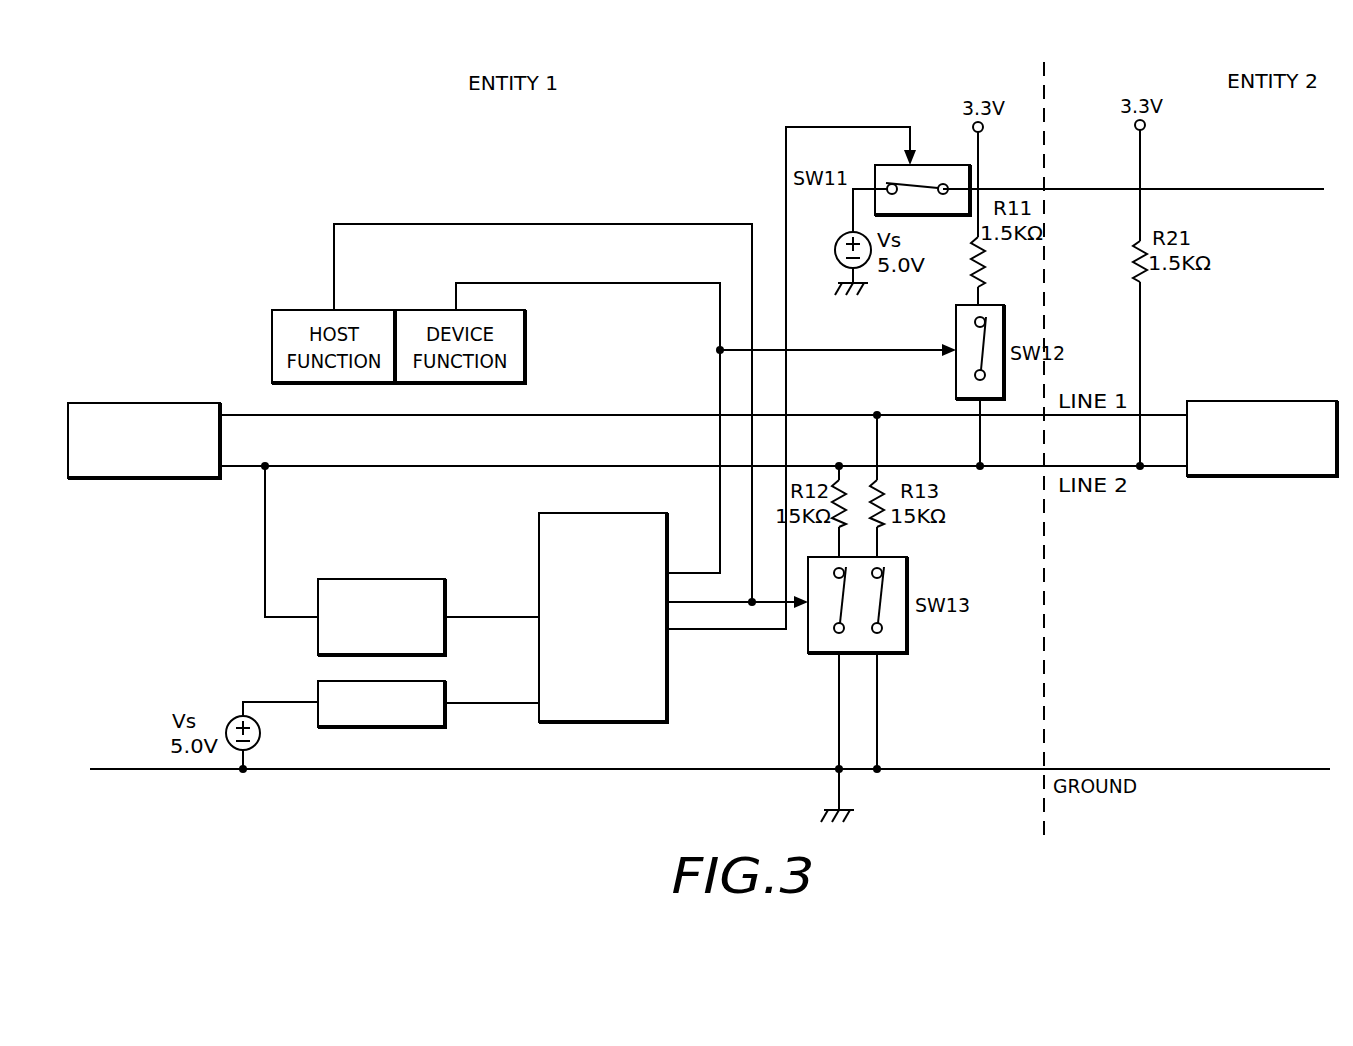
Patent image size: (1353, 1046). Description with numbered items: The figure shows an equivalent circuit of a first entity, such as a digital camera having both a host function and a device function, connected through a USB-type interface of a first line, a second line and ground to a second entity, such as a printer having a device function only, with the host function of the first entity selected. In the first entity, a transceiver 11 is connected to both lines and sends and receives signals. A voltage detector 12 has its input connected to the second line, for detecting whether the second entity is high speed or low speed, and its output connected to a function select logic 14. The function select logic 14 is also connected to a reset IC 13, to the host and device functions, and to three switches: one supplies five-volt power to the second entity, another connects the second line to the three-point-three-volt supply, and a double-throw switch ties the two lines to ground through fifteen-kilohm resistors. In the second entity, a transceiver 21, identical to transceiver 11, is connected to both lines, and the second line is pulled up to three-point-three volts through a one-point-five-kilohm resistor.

The transceiver 11 is at (135, 403).
The voltage detector 12 is at (372, 579).
The reset IC 13 is at (445, 681).
The function select logic 14 is at (590, 513).
The transceiver 21 is at (1250, 401).